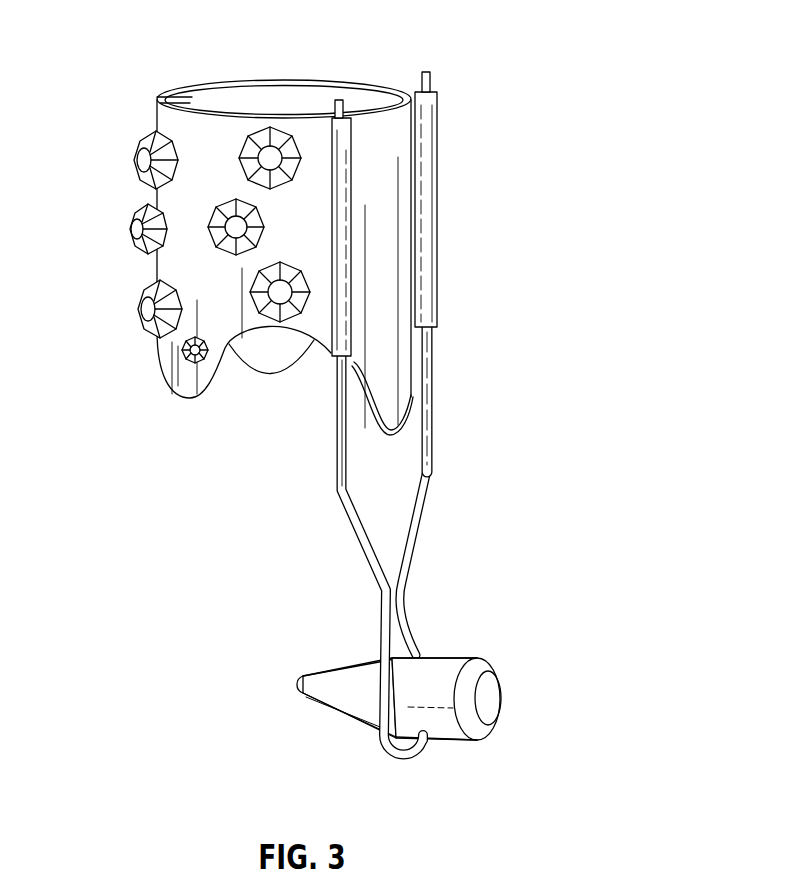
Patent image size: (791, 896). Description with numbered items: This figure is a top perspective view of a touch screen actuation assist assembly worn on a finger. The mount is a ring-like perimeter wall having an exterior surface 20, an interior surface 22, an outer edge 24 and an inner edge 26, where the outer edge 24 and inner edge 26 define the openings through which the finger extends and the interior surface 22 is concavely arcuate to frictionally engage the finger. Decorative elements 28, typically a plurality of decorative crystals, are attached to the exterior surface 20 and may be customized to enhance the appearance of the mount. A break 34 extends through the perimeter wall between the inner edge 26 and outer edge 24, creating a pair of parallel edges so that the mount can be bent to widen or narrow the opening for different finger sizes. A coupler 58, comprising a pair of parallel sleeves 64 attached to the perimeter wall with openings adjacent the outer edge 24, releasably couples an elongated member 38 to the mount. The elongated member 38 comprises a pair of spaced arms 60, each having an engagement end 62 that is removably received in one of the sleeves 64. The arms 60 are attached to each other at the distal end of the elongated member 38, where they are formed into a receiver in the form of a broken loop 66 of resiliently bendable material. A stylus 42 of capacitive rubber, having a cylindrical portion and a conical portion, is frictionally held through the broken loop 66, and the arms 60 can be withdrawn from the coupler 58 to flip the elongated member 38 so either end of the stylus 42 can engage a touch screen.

The exterior surface 20 is at (242, 225).
The interior surface 22 is at (277, 100).
The outer edge 24 is at (270, 375).
The inner edge 26 is at (307, 80).
The decorative elements 28 is at (132, 158).
The break 34 is at (150, 95).
The elongated member 38 is at (380, 489).
The stylus 42 is at (428, 722).
The coupler 58 is at (345, 178).
The arms 60 is at (433, 358).
The engagement end 62 is at (343, 100).
The sleeves 64 is at (335, 140).
The broken loop 66 is at (410, 633).